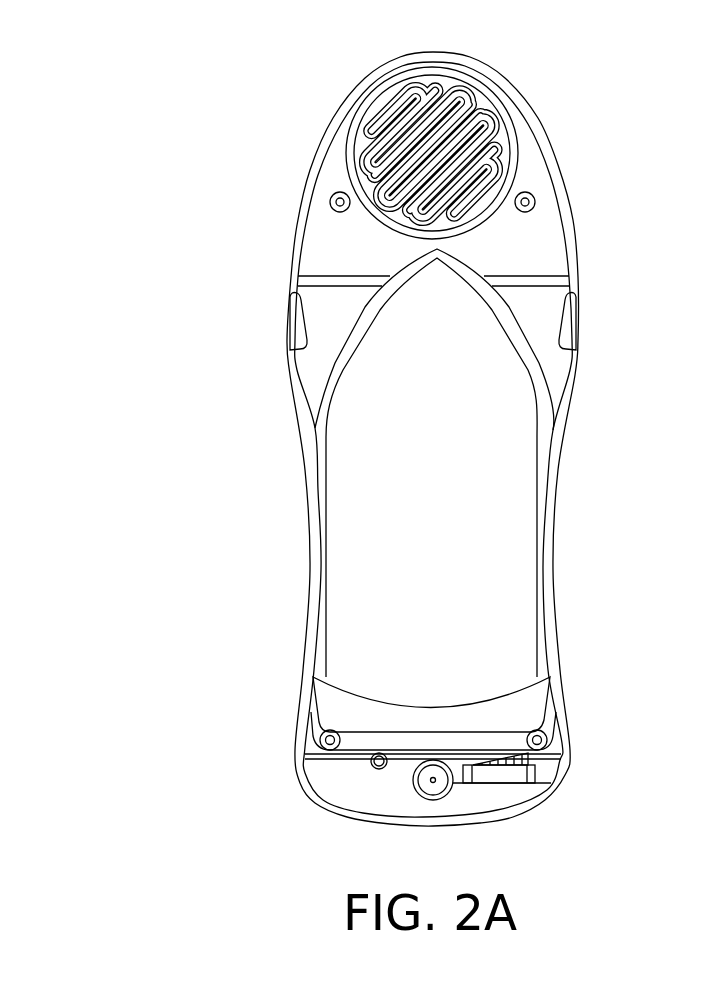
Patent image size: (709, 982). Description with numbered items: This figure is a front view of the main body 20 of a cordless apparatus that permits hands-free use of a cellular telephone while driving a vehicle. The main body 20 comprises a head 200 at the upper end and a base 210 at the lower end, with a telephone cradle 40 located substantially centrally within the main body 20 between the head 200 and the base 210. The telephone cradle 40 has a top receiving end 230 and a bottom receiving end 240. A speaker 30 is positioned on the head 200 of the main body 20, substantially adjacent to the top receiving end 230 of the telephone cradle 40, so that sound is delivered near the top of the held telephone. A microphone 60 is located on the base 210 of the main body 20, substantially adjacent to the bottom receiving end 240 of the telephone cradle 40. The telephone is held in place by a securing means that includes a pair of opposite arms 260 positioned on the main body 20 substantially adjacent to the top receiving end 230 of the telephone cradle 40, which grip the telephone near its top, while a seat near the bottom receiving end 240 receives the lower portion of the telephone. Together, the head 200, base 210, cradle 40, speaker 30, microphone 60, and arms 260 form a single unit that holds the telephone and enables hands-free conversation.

The main body 20 is at (276, 234).
The head 200 is at (333, 118).
The speaker 30 is at (497, 137).
The top receiving end 230 is at (437, 272).
The pair of opposite arms 260 is at (292, 323).
The telephone cradle 40 is at (430, 497).
The bottom receiving end 240 is at (403, 707).
The base 210 is at (558, 730).
The microphone 60 is at (416, 792).